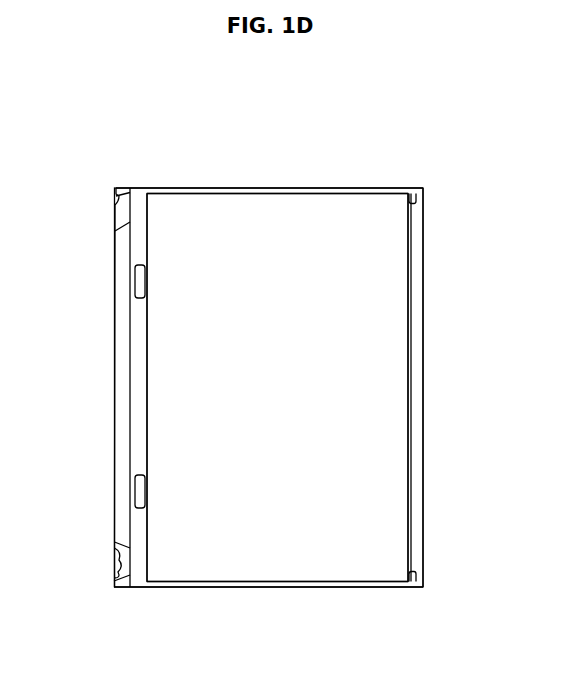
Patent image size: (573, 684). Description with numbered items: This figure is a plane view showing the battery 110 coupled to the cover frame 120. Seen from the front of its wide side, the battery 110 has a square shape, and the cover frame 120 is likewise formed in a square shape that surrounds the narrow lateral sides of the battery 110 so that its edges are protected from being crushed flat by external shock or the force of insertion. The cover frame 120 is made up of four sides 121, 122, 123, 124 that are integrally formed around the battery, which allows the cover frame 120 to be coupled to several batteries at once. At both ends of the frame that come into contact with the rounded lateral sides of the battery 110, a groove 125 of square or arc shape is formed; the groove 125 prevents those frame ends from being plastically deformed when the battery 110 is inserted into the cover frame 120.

The battery 110 is at (313, 233).
The cover frame 120 is at (429, 386).
The side of the cover frame 121 is at (417, 311).
The side of the cover frame 122 is at (278, 187).
The side of the cover frame 123 is at (268, 589).
The side of the cover frame 124 is at (121, 398).
The groove 125 is at (418, 197).